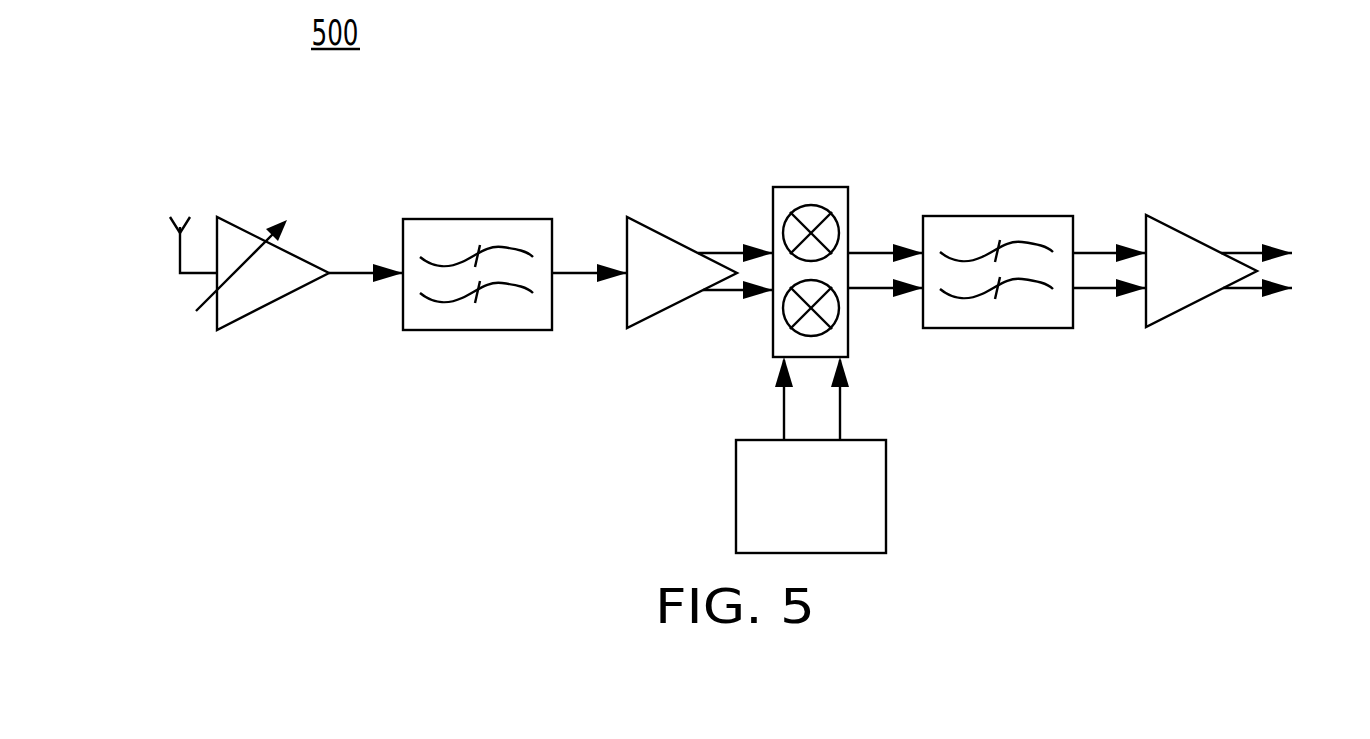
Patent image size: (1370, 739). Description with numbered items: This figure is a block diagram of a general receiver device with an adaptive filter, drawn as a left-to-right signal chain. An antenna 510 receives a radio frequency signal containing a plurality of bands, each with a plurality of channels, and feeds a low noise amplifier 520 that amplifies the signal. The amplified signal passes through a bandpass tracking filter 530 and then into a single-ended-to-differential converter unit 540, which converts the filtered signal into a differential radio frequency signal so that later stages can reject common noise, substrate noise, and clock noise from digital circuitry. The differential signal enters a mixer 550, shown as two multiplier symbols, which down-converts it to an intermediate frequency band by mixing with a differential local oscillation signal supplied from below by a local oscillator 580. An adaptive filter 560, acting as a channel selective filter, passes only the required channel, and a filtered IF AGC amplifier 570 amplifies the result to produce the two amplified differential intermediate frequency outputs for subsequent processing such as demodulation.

The antenna 510 is at (180, 233).
The low noise amplifier 520 is at (287, 219).
The bandpass tracking filter 530 is at (478, 219).
The single-ended-to-differential converter unit 540 is at (668, 233).
The mixer 550 is at (810, 187).
The adaptive filter 560 is at (995, 216).
The filtered IF AGC amplifier 570 is at (1188, 233).
The local oscillator 580 is at (736, 497).